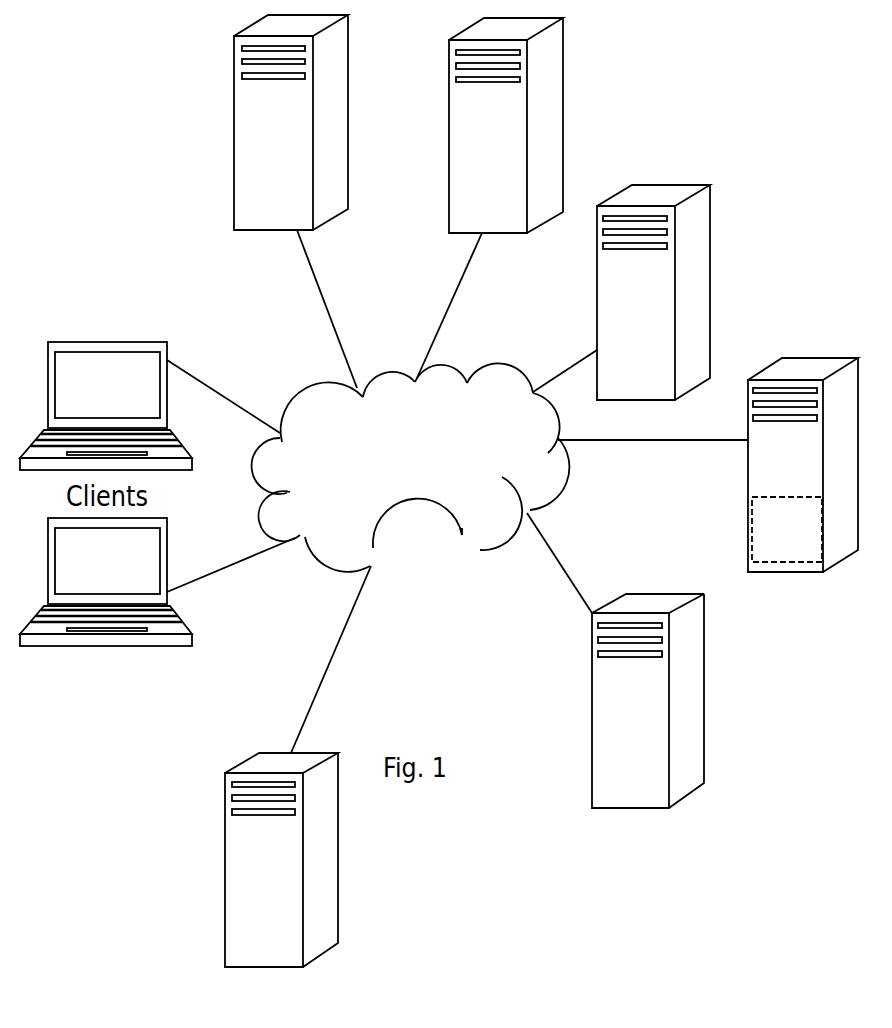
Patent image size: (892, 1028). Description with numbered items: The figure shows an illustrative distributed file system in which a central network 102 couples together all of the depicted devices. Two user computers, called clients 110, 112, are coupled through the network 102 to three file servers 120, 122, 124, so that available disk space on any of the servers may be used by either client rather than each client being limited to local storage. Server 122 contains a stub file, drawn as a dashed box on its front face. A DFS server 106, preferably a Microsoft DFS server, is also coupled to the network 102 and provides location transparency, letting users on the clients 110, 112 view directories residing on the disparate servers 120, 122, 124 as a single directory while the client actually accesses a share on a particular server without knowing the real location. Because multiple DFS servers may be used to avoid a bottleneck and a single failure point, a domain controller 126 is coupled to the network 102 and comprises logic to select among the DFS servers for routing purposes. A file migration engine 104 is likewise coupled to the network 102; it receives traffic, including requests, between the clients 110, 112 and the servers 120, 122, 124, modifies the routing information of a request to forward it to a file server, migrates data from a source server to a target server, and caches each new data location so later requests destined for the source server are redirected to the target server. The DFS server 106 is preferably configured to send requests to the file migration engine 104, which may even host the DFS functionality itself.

The network 102 is at (411, 504).
The file migration engine (FME) 104 is at (525, 198).
The DFS server 106 is at (206, 201).
The client 110 is at (150, 383).
The client 112 is at (157, 609).
The file server 120 is at (653, 292).
The file server 122 is at (708, 491).
The file server 124 is at (647, 660).
The domain controller 126 is at (148, 950).